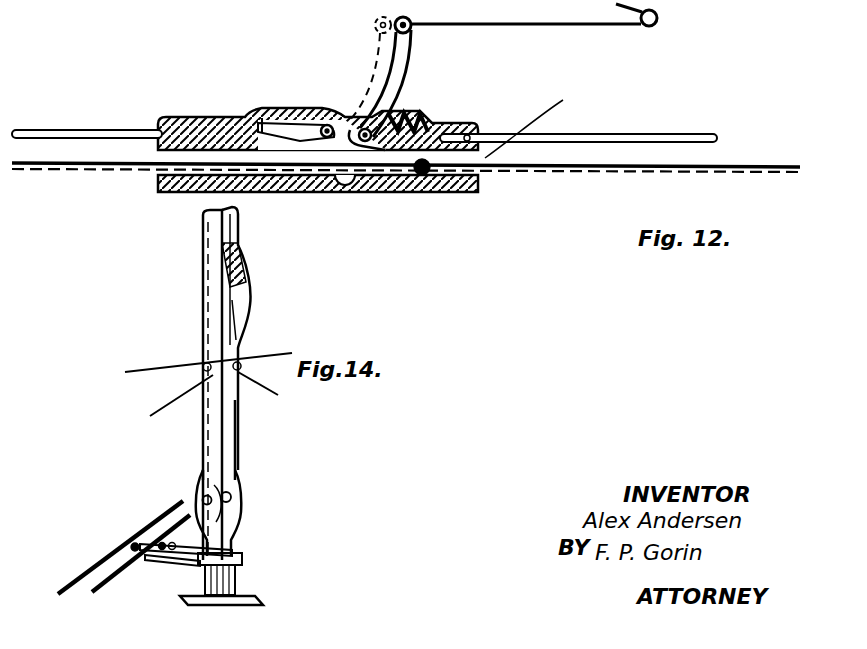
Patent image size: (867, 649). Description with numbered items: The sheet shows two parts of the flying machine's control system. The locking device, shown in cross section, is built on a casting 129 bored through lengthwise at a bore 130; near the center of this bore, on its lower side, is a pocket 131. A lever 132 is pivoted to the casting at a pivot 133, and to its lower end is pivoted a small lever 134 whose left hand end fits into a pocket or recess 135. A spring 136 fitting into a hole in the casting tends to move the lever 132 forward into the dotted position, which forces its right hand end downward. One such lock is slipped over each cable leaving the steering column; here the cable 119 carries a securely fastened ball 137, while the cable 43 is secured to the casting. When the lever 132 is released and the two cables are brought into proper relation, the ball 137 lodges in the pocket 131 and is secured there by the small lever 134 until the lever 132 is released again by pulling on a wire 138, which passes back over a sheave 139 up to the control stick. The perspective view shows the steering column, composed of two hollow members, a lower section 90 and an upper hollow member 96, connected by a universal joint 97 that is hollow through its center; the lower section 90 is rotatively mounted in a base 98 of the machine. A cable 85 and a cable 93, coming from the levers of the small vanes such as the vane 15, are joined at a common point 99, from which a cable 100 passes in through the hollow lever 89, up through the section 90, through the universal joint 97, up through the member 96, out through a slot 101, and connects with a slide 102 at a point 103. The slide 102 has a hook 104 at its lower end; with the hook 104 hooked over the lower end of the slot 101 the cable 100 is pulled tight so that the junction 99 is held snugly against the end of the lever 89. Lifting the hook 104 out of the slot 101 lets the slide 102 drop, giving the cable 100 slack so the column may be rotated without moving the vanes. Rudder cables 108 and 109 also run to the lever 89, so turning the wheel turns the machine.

In FIG. 12, the small vane 15 is at (766, 9).
In FIG. 12, the cable 43 is at (45, 104).
In FIG. 12, the cable 119 is at (55, 170).
In FIG. 12, the casting 129 is at (182, 117).
In FIG. 12, the bore 130 is at (546, 120).
In FIG. 12, the pocket 131 is at (355, 195).
In FIG. 12, the lever 132 is at (405, 62).
In FIG. 12, the pivot 133 is at (350, 115).
In FIG. 12, the small lever 134 is at (312, 115).
In FIG. 12, the pocket or recess 135 is at (250, 115).
In FIG. 12, the spring 136 is at (408, 113).
In FIG. 12, the ball 137 is at (415, 195).
In FIG. 12, the wire 138 is at (549, 6).
In FIG. 12, the sheave 139 is at (658, 20).
In FIG. 14, the cable 85 is at (62, 590).
In FIG. 14, the lever 89 is at (163, 556).
In FIG. 14, the lower section of steering column 90 is at (243, 541).
In FIG. 14, the cable 93 is at (162, 540).
In FIG. 14, the hollow member 96 is at (238, 420).
In FIG. 14, the universal joint 97 is at (240, 488).
In FIG. 14, the base 98 is at (263, 600).
In FIG. 14, the common point 99 is at (135, 543).
In FIG. 14, the cable 100 is at (208, 412).
In FIG. 14, the slot 101 is at (205, 228).
In FIG. 14, the slide 102 is at (249, 305).
In FIG. 14, the connection point 103 is at (240, 283).
In FIG. 14, the hook 104 is at (245, 340).
In FIG. 14, the cable 108 is at (172, 540).
In FIG. 14, the cable 109 is at (140, 563).